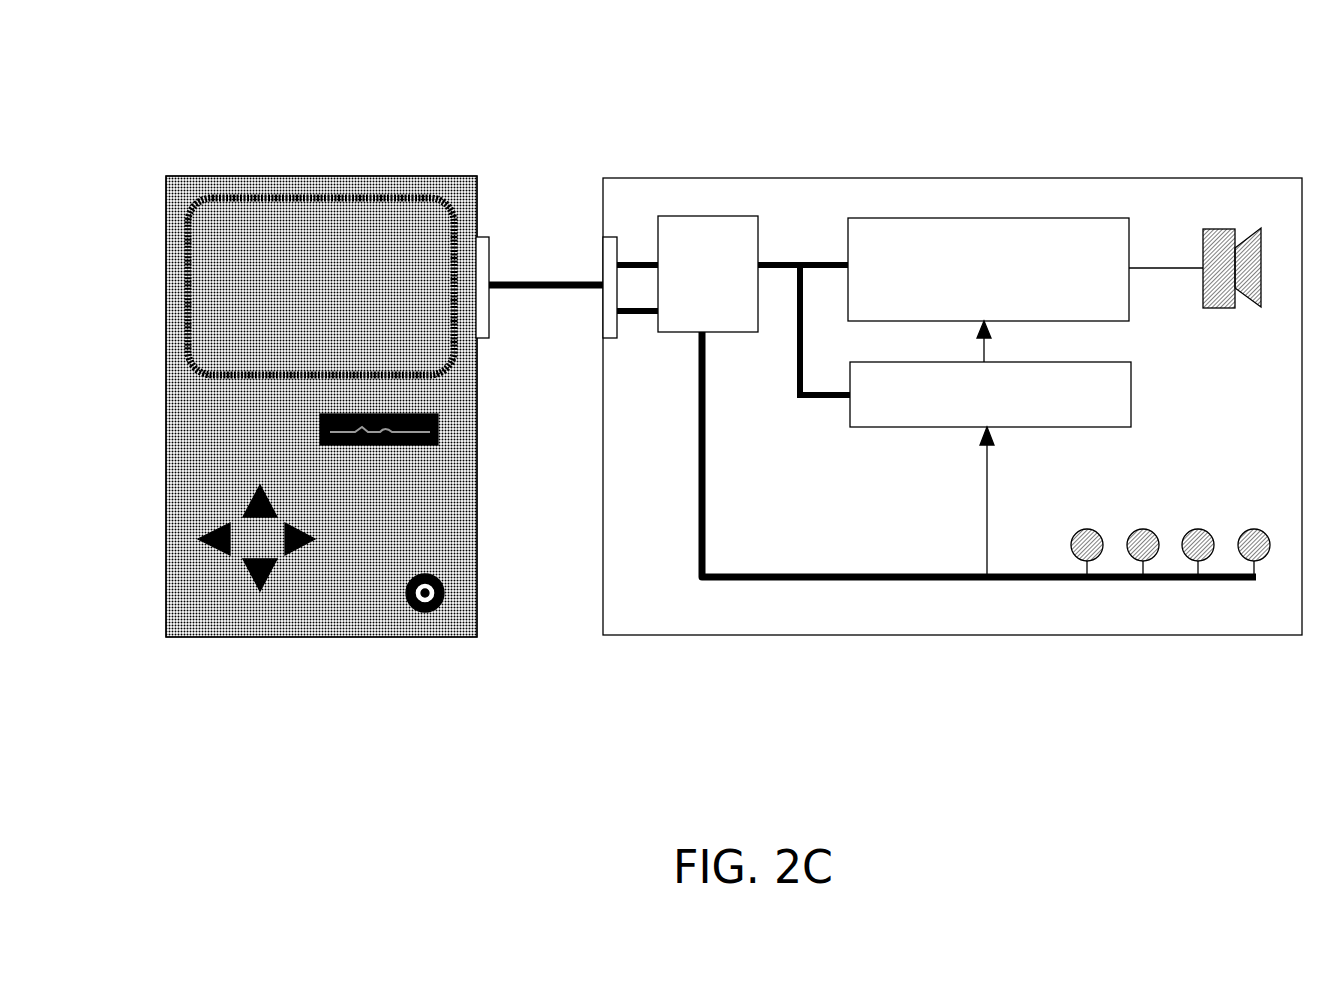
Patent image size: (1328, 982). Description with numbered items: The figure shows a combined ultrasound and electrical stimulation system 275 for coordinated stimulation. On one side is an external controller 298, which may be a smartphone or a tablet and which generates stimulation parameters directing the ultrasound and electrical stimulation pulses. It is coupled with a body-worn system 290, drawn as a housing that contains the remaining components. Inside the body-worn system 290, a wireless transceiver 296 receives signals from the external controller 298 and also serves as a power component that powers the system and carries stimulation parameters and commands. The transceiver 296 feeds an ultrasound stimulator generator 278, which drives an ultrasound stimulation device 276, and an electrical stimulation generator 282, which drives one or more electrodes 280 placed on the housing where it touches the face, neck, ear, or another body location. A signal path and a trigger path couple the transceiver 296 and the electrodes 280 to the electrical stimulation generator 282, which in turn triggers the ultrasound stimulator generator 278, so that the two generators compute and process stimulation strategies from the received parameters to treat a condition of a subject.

The combined ultrasound and electrical stimulation system 275 is at (372, 90).
The ultrasound stimulation device 276 is at (1225, 205).
The ultrasound stimulator generator 278 is at (988, 269).
The electrodes 280 is at (1164, 609).
The electrical stimulation generator 282 is at (990, 394).
The body-worn system 290 is at (984, 668).
The wireless transceiver 296 is at (708, 274).
The external controller 298 is at (348, 666).